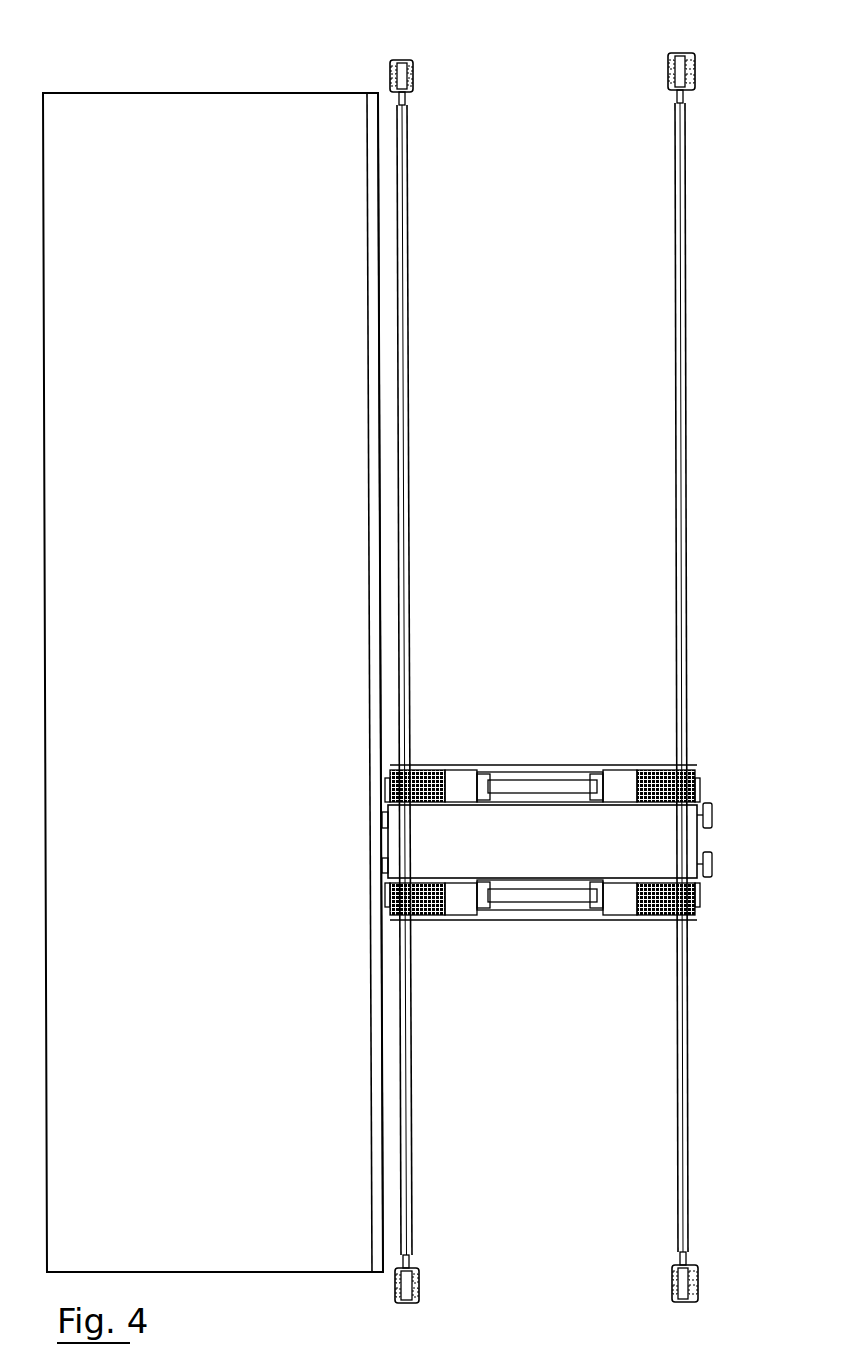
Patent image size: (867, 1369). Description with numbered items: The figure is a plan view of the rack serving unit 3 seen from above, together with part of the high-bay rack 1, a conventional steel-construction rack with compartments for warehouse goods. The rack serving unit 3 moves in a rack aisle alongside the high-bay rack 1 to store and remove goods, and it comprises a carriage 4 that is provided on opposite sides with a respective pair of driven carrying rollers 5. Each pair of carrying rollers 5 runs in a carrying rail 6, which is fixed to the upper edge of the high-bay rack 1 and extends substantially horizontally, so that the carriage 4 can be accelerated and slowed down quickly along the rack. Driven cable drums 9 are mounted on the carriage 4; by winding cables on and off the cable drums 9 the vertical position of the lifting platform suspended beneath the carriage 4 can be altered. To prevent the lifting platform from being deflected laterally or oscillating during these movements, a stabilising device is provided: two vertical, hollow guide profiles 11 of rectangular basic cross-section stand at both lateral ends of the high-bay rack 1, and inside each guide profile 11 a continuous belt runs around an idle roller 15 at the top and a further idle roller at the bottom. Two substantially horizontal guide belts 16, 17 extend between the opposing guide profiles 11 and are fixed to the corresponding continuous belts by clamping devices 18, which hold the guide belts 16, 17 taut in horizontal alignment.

The high-bay rack 1 is at (203, 588).
The rack serving unit 3 is at (589, 890).
The carriage 4 is at (540, 828).
The carrying rollers 5 is at (713, 812).
The carrying rail 6 is at (377, 1150).
The cable drums 9 is at (422, 768).
The guide profiles 11 is at (396, 62).
The idle roller 15 is at (404, 64).
The guide belt 16 is at (678, 342).
The guide belt 17 is at (399, 318).
The clamping device 18 is at (403, 100).